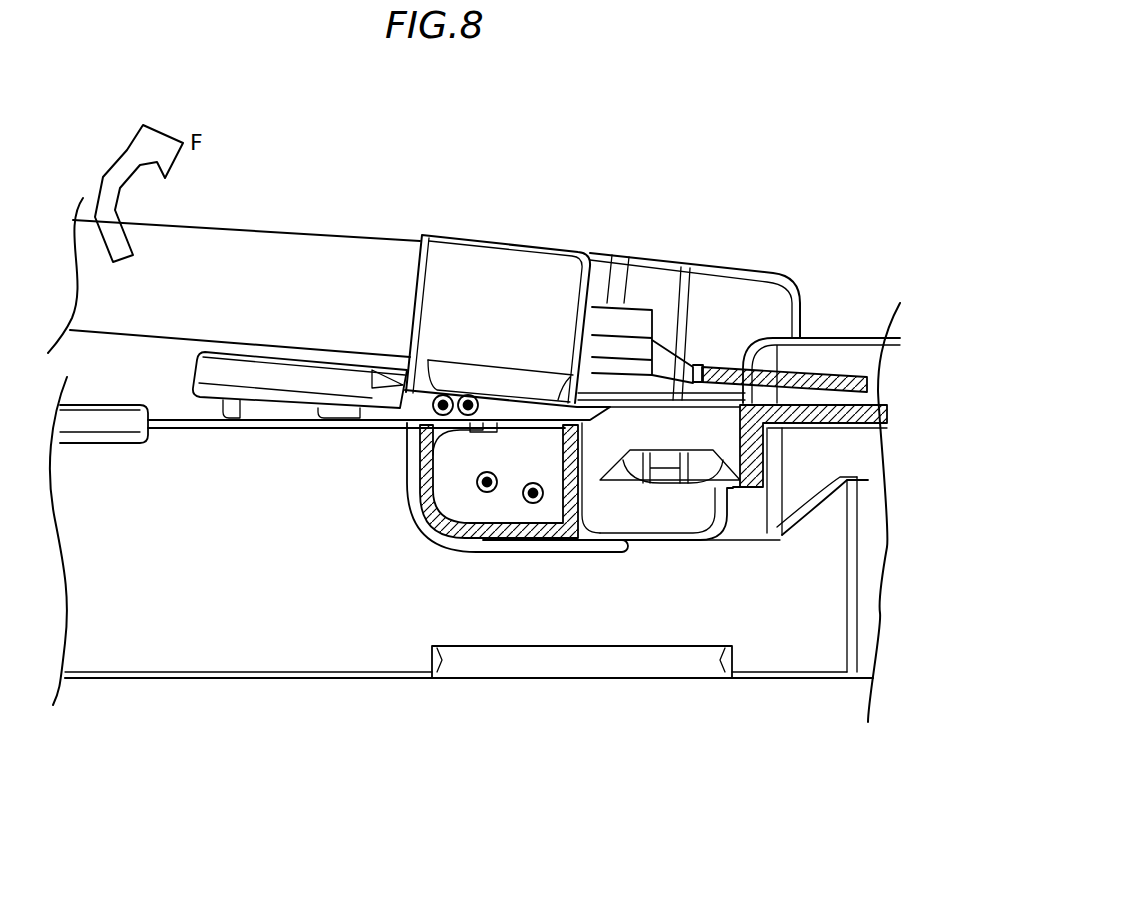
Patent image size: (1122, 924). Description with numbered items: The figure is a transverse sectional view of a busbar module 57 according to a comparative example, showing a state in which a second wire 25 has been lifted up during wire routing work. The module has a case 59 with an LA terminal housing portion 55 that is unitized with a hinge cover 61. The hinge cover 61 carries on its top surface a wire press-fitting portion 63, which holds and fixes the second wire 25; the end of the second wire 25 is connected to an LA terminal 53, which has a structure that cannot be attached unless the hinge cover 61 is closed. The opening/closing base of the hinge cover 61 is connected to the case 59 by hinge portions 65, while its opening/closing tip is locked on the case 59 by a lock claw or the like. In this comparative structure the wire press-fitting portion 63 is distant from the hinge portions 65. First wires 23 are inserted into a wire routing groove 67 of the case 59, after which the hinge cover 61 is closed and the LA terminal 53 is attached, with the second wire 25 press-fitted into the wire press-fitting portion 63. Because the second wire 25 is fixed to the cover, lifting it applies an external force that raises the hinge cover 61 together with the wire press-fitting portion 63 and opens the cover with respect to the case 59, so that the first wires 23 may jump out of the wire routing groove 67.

The first wires 23 is at (470, 394).
The second wire 25 is at (234, 230).
The LA terminal 53 is at (817, 366).
The LA terminal housing portion 55 is at (709, 330).
The busbar module 57 is at (614, 206).
The case 59 is at (138, 686).
The hinge cover 61 is at (249, 352).
The wire press-fitting portion 63 is at (450, 232).
The hinge portions 65 is at (270, 408).
The wire routing groove 67 is at (490, 511).